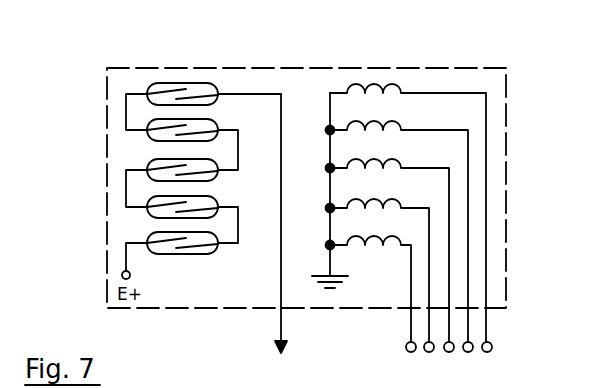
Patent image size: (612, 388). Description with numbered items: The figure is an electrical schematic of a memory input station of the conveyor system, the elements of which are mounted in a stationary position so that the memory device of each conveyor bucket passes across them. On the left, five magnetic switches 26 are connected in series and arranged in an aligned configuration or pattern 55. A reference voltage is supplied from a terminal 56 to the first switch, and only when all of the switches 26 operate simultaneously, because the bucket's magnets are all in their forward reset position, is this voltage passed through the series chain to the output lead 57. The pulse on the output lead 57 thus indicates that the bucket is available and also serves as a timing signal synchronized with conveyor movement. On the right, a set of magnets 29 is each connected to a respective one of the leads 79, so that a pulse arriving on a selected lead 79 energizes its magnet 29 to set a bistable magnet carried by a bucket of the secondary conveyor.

The configuration or pattern 55 is at (232, 52).
The magnetic switches 26 is at (202, 94).
The magnets 29 is at (403, 89).
The terminal 56 is at (130, 274).
The output lead 57 is at (280, 290).
The leads 79 is at (502, 357).